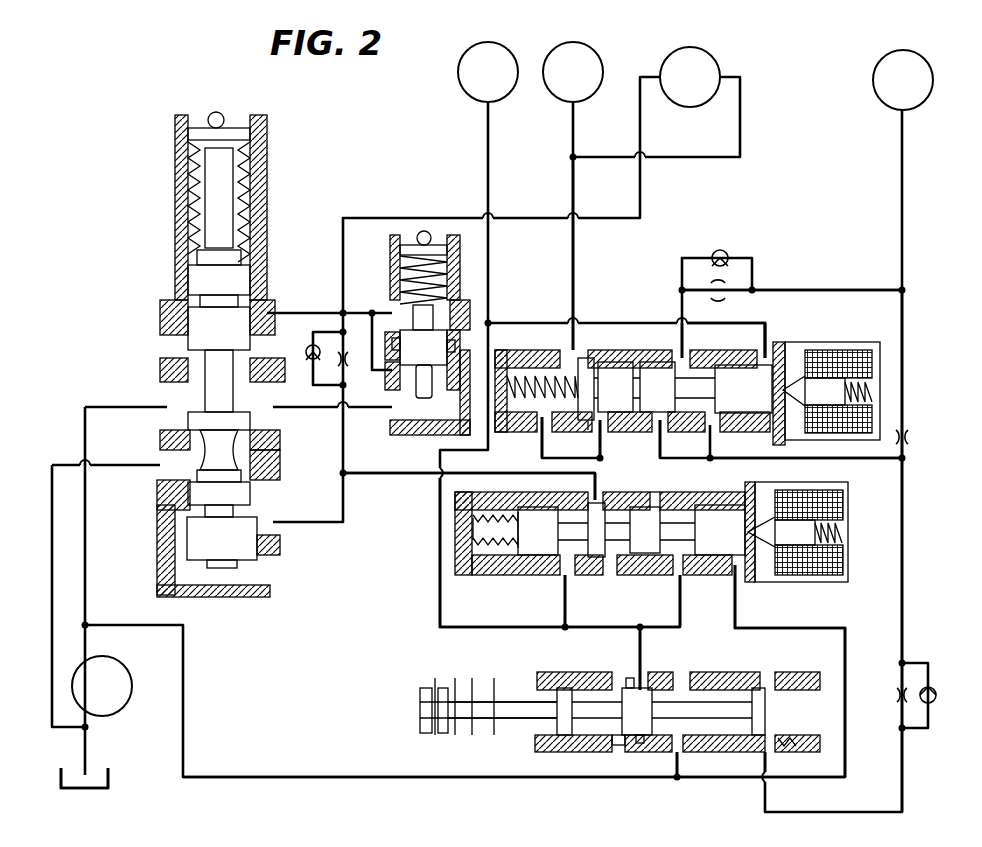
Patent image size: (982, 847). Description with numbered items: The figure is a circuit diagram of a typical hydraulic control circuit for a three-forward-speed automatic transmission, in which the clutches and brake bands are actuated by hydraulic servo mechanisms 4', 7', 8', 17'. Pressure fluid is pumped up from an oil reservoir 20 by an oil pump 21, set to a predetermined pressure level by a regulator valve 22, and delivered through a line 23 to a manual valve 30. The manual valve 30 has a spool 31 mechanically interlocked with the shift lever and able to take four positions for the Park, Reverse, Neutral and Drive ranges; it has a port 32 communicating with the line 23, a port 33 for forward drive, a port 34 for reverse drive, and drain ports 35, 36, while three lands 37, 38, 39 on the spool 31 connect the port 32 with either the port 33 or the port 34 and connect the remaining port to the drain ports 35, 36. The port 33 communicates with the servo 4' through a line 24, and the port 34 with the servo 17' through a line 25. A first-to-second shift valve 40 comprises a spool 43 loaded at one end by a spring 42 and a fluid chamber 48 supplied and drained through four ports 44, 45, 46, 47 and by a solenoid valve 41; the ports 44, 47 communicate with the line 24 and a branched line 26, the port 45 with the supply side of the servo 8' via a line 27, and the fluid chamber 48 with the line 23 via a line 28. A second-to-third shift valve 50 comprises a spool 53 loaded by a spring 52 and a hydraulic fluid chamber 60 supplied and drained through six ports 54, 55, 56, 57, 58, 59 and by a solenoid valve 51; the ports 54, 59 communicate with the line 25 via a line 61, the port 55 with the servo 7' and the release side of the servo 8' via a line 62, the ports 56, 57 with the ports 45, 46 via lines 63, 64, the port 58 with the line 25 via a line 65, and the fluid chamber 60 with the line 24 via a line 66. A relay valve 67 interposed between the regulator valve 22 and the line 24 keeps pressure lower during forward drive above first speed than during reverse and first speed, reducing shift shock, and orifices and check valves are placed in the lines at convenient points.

The hydraulic servo 4' is at (494, 60).
The hydraulic servo 7' is at (580, 60).
The hydraulic servo 8' is at (696, 63).
The hydraulic servo 17' is at (892, 64).
The oil reservoir 20 is at (108, 784).
The oil pump 21 is at (115, 682).
The regulator valve 22 is at (232, 597).
The line 23 is at (318, 777).
The line 24 is at (498, 628).
The line 25 is at (903, 572).
The line 26 is at (640, 626).
The line 27 is at (478, 473).
The line 28 is at (792, 628).
The manual valve 30 is at (622, 703).
The spool 31 is at (526, 707).
The port 32 is at (679, 752).
The port 33 is at (643, 686).
The port 34 is at (760, 750).
The drain port 35 is at (616, 750).
The drain port 36 is at (790, 748).
The land 37 is at (562, 690).
The land 38 is at (620, 692).
The land 39 is at (755, 690).
The first-to-second shift valve 40 is at (600, 550).
The solenoid valve 41 is at (848, 520).
The spring 42 is at (492, 512).
The spool 43 is at (538, 515).
The port 44 is at (560, 575).
The port 45 is at (597, 503).
The port 46 is at (656, 507).
The port 47 is at (683, 575).
The fluid chamber 48 is at (718, 515).
The second-to-third shift valve 50 is at (633, 374).
The solenoid valve 51 is at (880, 374).
The spring 52 is at (526, 372).
The spool 53 is at (632, 368).
The port 54 is at (541, 425).
The port 55 is at (576, 362).
The port 56 is at (590, 430).
The port 57 is at (657, 387).
The port 58 is at (690, 362).
The port 59 is at (743, 389).
The hydraulic fluid chamber 60 is at (760, 363).
The line 61 is at (752, 460).
The line 62 is at (576, 248).
The line 63 is at (604, 440).
The line 64 is at (664, 443).
The line 65 is at (810, 290).
The line 66 is at (730, 323).
The relay valve 67 is at (398, 272).